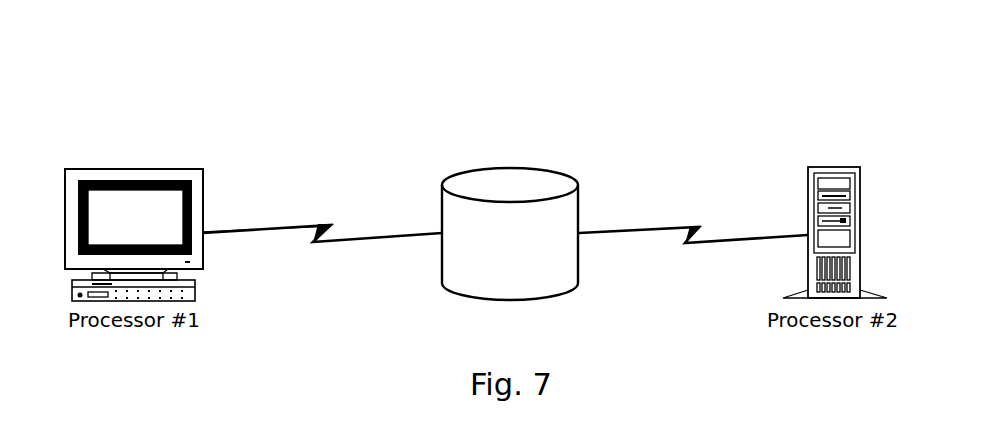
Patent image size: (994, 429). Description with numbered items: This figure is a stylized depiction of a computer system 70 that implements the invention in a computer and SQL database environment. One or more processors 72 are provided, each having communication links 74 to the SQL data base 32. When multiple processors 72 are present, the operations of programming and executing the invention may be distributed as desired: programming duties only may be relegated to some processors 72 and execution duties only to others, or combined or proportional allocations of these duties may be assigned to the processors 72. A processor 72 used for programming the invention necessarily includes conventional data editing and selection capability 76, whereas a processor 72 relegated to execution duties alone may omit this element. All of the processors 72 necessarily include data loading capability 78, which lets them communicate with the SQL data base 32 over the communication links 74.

The SQL data base 32 is at (510, 167).
The computer system 70 is at (340, 142).
The processors 72 is at (100, 168).
The communication links 74 is at (328, 224).
The data editing and selection capability 76 is at (135, 168).
The data loading capability 78 is at (168, 168).